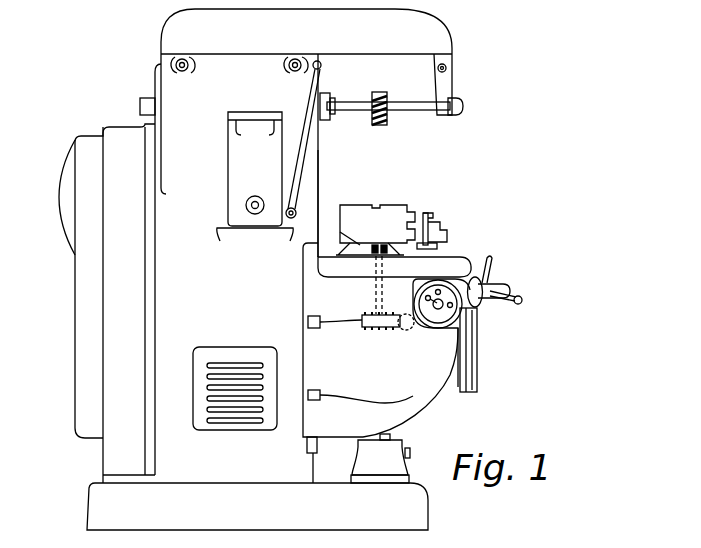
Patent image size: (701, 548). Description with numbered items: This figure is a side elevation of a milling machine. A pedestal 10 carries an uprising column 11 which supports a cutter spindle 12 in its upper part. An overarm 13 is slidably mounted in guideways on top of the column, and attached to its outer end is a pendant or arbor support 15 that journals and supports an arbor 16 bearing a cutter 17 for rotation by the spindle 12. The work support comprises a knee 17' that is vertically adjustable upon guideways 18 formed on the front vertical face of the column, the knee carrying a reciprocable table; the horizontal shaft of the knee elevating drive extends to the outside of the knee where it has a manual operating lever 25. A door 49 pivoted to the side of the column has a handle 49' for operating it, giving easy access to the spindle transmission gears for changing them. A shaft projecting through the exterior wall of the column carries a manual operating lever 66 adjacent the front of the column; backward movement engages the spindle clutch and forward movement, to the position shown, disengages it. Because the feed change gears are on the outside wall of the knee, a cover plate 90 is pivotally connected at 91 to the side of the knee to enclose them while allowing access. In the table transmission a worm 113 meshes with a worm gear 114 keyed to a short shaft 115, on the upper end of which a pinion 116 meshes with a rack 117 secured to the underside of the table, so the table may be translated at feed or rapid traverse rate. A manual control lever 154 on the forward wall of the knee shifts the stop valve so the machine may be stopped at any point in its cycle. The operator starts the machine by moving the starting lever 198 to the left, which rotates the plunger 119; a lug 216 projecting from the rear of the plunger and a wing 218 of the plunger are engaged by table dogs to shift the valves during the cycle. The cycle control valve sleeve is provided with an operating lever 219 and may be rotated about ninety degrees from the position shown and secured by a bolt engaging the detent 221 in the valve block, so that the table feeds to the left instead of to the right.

The pedestal 10 is at (96, 509).
The column 11 is at (178, 89).
The cutter spindle 12 is at (322, 92).
The overarm 13 is at (447, 37).
The arbor support 15 is at (452, 82).
The arbor 16 is at (423, 110).
The cutter 17 is at (388, 98).
The knee 17' is at (491, 350).
The guideways 18 is at (321, 183).
The manual operating lever 25 is at (497, 283).
The door 49 is at (239, 169).
The handle 49' is at (255, 229).
The manual operating lever 66 is at (304, 158).
The cover plate 90 is at (407, 394).
The pivotal connection 91 is at (312, 317).
The worm 113 is at (404, 329).
The worm gear 114 is at (367, 329).
The short shaft 115 is at (377, 289).
The pinion 116 is at (380, 247).
The rack 117 is at (340, 233).
The plunger 119 is at (346, 210).
The manual control lever 154 is at (496, 259).
The starting lever 198 is at (521, 299).
The lug 216 is at (435, 222).
The wing 218 is at (447, 233).
The operating lever 219 is at (428, 325).
The detent 221 is at (431, 303).